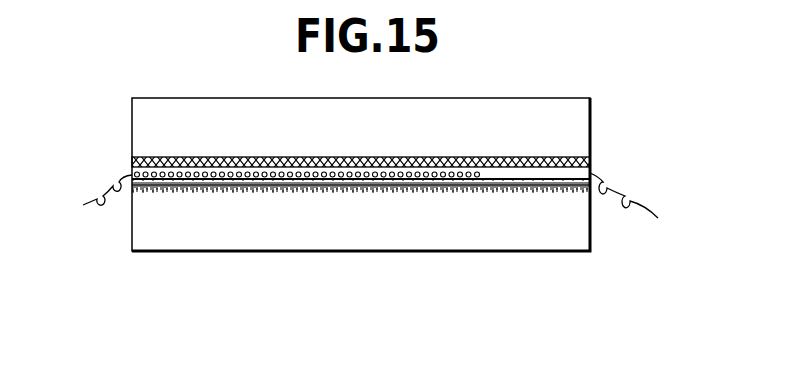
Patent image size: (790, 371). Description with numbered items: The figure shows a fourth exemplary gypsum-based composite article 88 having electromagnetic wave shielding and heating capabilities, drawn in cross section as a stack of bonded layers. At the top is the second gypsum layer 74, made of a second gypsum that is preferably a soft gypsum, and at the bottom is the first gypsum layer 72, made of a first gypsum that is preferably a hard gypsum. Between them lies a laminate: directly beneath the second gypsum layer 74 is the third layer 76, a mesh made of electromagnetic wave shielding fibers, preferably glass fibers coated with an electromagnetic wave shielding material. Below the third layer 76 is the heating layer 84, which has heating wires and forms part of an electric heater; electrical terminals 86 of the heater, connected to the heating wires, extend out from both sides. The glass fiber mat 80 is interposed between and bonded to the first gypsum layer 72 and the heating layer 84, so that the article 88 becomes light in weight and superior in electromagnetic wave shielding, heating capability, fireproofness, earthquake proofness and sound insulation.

The fourth exemplary gypsum-based composite article 88 is at (602, 100).
The second gypsum layer 74 is at (590, 120).
The third layer 76 is at (590, 160).
The heating layer 84 is at (132, 161).
The glass fiber mat 80 is at (480, 192).
The first gypsum layer 72 is at (590, 232).
The electrical terminals 86 is at (110, 182).